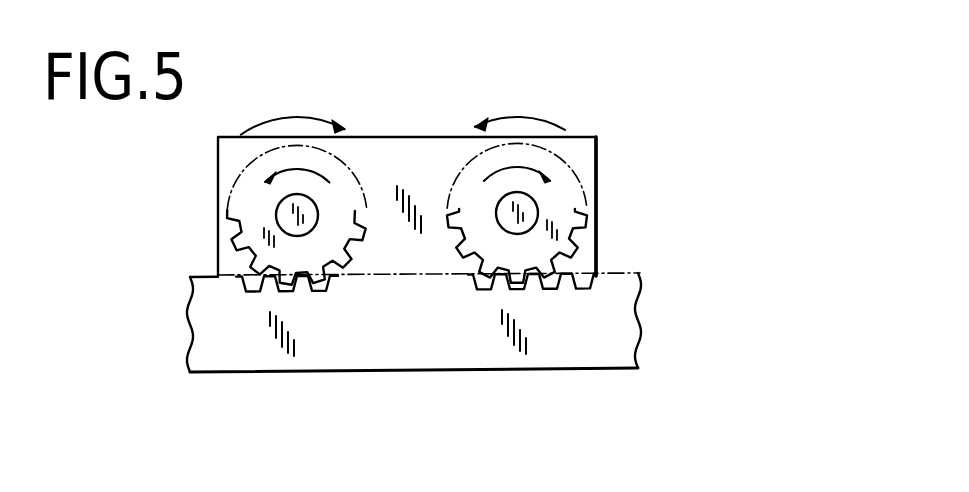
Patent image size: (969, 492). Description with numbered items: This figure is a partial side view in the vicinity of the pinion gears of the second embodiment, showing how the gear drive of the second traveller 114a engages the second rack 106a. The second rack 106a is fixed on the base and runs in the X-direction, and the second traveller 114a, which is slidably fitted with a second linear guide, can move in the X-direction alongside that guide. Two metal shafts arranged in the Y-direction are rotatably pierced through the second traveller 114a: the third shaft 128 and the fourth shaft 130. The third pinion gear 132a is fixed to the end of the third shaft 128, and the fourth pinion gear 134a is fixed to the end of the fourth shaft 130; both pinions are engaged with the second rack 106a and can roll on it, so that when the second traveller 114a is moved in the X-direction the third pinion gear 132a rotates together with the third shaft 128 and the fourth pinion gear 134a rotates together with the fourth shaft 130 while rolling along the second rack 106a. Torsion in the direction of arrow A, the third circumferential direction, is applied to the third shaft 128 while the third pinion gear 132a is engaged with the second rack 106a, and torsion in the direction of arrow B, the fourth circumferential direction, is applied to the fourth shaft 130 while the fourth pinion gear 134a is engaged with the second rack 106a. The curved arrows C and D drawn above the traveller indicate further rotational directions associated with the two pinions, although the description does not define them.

The second traveller 114a is at (510, 158).
The third pinion gear 132a is at (624, 205).
The fourth pinion gear 134a is at (227, 214).
The third shaft 128 is at (641, 228).
The fourth shaft 130 is at (210, 301).
The second rack 106a is at (502, 322).
The arrow A is at (476, 313).
The arrow B is at (357, 102).
The rotation direction around right gear C is at (545, 68).
The rotation direction around left gear D is at (293, 71).